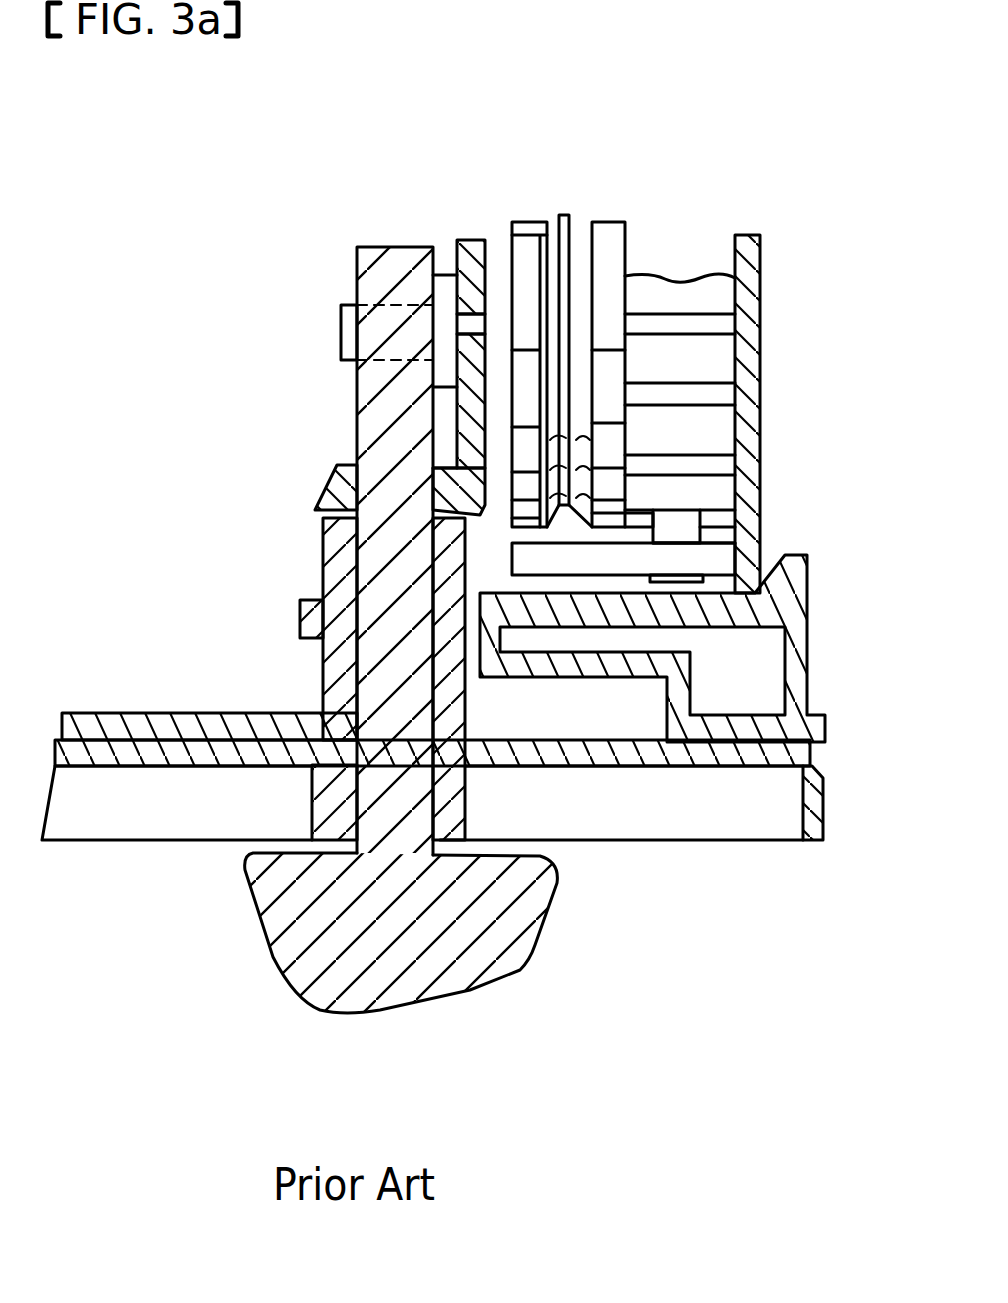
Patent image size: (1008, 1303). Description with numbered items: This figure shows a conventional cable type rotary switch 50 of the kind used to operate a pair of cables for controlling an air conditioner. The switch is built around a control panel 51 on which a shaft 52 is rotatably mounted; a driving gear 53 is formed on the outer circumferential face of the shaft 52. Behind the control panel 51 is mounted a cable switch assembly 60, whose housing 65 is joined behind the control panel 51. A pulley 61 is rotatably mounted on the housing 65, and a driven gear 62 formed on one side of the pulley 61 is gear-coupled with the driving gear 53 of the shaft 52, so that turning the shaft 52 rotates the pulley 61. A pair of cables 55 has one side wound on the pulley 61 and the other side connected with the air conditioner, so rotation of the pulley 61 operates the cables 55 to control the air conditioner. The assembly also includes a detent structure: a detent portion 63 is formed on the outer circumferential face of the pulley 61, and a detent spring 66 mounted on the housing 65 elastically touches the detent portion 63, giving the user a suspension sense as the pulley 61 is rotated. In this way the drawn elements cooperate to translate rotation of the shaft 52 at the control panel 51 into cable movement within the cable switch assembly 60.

The cable type rotary switch 50 is at (195, 932).
The control panel 51 is at (823, 800).
The shaft 52 is at (390, 663).
The driving gear 53 is at (330, 476).
The pair of cables 55 is at (557, 257).
The cable switch assembly 60 is at (651, 255).
The pulley 61 is at (616, 242).
The driven gear 62 is at (467, 237).
The detent portion 63 is at (688, 467).
The housing 65 is at (747, 285).
The detent spring 66 is at (688, 522).